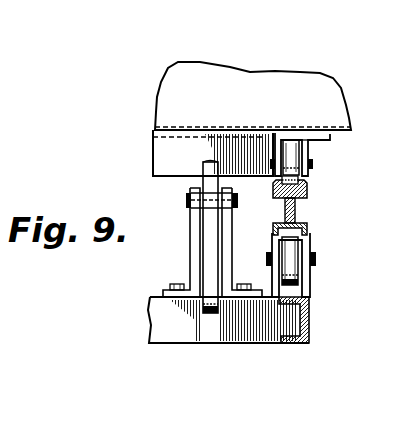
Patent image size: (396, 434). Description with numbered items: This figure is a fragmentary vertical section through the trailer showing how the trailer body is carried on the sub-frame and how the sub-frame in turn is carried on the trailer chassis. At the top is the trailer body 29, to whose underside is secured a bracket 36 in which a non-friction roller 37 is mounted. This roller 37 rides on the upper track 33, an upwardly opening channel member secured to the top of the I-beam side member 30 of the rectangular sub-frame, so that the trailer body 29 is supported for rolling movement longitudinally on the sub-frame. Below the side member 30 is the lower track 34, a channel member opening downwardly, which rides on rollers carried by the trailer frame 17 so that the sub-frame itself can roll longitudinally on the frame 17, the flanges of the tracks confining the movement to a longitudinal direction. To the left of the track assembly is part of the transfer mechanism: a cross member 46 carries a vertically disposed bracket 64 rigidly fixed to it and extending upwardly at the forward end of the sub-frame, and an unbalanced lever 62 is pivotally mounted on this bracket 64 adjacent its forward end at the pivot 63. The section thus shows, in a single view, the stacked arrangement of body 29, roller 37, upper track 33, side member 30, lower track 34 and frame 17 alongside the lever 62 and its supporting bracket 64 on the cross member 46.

The trailer body 29 is at (268, 87).
The brackets 36 is at (310, 144).
The non-friction rollers 37 is at (290, 163).
The upper tracks 33 is at (308, 190).
The I-beam side members 30 is at (287, 210).
The lower tracks 34 is at (308, 236).
The pivot 63 is at (188, 202).
The unbalanced lever 62 is at (212, 245).
The bracket 64 is at (195, 265).
The cross member 46 is at (190, 332).
The frame 17 is at (296, 335).